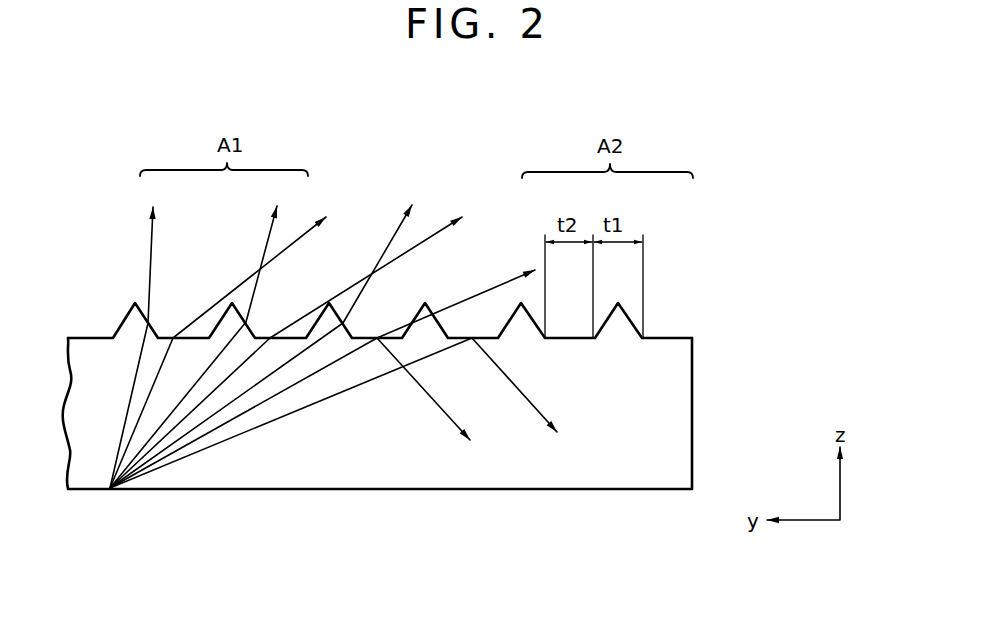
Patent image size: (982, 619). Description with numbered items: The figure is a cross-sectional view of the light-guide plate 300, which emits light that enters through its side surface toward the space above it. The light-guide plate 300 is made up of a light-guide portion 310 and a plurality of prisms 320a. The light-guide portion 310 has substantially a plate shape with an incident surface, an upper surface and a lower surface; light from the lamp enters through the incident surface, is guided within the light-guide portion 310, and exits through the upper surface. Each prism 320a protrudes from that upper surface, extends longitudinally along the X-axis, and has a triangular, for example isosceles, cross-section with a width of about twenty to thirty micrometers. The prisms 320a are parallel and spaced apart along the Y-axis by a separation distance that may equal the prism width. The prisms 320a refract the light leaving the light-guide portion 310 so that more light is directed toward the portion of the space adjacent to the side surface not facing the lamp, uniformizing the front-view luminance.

The light-guide plate 300 is at (459, 396).
The light-guide portion 310 is at (670, 392).
The prism 320a is at (622, 325).